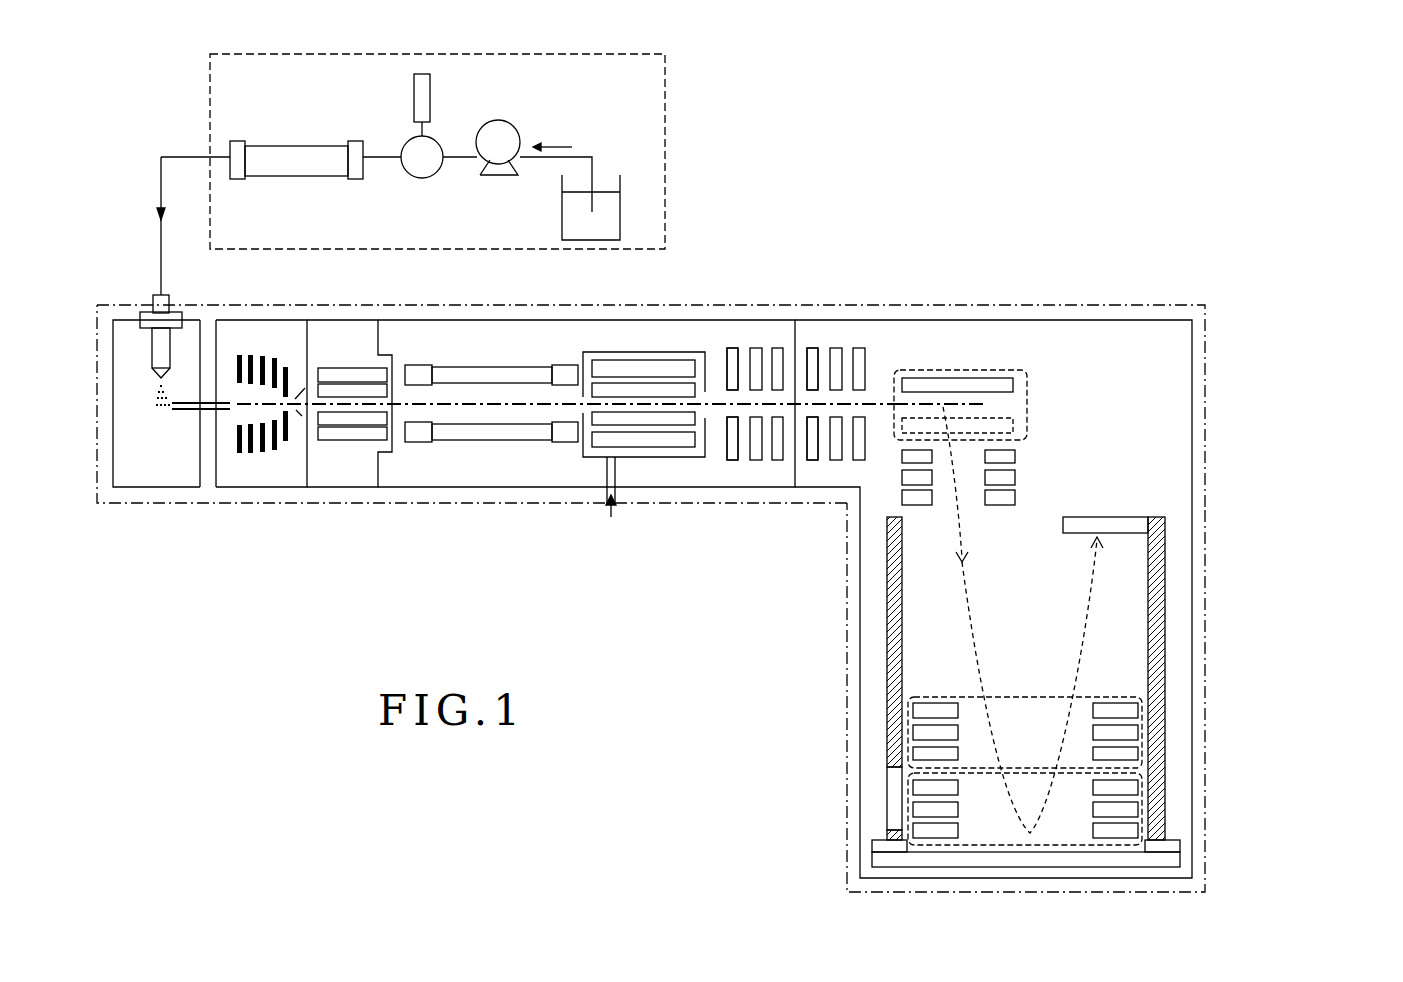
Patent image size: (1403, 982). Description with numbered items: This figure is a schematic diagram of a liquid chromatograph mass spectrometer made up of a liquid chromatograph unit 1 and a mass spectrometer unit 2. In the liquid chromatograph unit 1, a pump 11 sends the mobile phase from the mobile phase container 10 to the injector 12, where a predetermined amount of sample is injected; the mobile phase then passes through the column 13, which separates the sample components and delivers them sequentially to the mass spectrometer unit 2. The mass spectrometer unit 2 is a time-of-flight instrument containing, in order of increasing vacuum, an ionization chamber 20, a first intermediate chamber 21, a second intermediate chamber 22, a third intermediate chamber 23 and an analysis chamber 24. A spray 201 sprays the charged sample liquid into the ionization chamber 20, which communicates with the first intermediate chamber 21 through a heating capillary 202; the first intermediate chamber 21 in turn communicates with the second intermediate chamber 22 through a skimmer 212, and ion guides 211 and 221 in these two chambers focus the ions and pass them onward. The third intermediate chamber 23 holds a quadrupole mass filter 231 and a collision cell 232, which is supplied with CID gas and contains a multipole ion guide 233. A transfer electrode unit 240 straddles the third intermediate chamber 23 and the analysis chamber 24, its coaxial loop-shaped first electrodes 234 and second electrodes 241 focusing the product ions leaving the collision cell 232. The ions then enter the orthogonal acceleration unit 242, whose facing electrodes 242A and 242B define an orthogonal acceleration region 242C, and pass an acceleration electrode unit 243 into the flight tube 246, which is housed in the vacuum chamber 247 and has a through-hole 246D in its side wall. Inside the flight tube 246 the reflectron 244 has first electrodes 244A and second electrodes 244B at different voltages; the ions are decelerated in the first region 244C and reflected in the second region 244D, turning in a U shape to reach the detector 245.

The liquid chromatograph unit 1 is at (665, 70).
The mobile phase container 10 is at (620, 217).
The pump 11 is at (506, 178).
The injector 12 is at (422, 178).
The column 13 is at (310, 176).
The mass spectrometer unit 2 is at (1075, 306).
The ionization chamber 20 is at (145, 503).
The spray 201 is at (152, 308).
The heating capillary 202 is at (197, 412).
The first intermediate chamber 21 is at (223, 487).
The ion guide 211 is at (234, 338).
The skimmer 212 is at (298, 414).
The second intermediate chamber 22 is at (347, 487).
The ion guide 221 is at (357, 368).
The third intermediate chamber 23 is at (443, 487).
The quadrupole mass filter 231 is at (497, 362).
The collision cell 232 is at (683, 352).
The multipole ion guide 233 is at (598, 360).
The first electrode 234 is at (769, 338).
The analysis chamber 24 is at (1158, 330).
The transfer electrode unit 240 is at (905, 216).
The second electrode 241 is at (852, 338).
The orthogonal acceleration unit 242 is at (1160, 377).
The electrode 242A is at (1013, 386).
The electrode 242B is at (1013, 428).
The orthogonal acceleration region 242C is at (997, 408).
The acceleration electrode unit 243 is at (1028, 447).
The reflectron 244 is at (1336, 718).
The first electrode 244A is at (1142, 728).
The second electrode 244B is at (1142, 807).
The first region 244C is at (972, 737).
The second region 244D is at (975, 813).
The detector 245 is at (1142, 517).
The flight tube 246 is at (1165, 568).
The through-hole 246D is at (900, 768).
The vacuum chamber 247 is at (1205, 650).